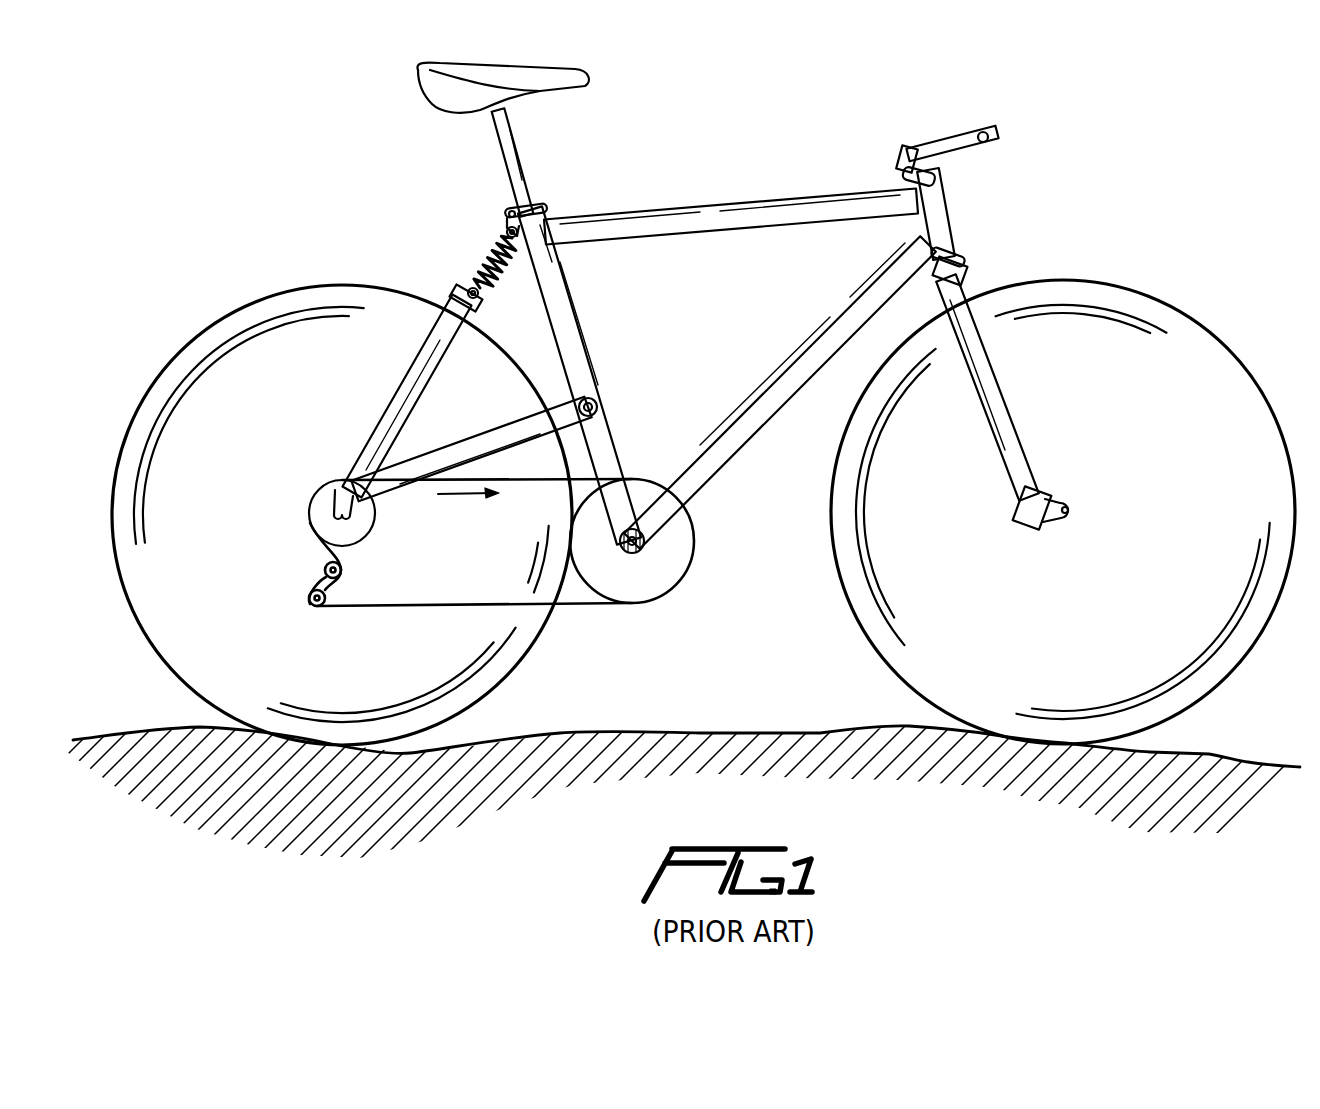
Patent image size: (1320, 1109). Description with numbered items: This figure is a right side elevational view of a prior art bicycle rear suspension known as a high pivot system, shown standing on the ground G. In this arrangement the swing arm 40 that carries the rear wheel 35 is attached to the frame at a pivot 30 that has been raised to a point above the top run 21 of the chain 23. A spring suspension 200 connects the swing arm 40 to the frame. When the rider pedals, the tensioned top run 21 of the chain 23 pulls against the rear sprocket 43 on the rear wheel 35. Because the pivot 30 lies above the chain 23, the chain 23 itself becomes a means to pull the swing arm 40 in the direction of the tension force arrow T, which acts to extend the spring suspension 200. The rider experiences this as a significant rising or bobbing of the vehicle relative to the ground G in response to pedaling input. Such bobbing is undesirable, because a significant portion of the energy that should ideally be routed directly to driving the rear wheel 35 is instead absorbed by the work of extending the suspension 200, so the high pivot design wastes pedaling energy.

The rear wheel 35 is at (213, 323).
The swing arm 40 is at (410, 370).
The spring suspension 200 is at (478, 240).
The pivot 30 is at (600, 400).
The top run 21 is at (493, 476).
The rear sprocket 43 is at (324, 501).
The chain 23 is at (563, 605).
The tension force arrow T is at (473, 505).
The ground G is at (768, 733).